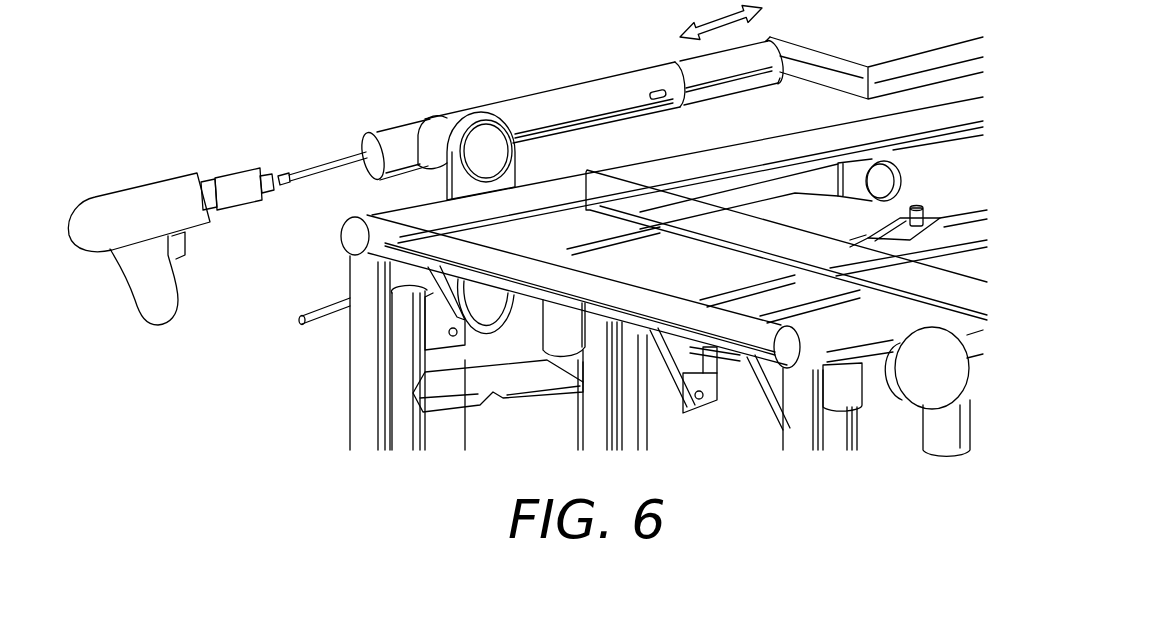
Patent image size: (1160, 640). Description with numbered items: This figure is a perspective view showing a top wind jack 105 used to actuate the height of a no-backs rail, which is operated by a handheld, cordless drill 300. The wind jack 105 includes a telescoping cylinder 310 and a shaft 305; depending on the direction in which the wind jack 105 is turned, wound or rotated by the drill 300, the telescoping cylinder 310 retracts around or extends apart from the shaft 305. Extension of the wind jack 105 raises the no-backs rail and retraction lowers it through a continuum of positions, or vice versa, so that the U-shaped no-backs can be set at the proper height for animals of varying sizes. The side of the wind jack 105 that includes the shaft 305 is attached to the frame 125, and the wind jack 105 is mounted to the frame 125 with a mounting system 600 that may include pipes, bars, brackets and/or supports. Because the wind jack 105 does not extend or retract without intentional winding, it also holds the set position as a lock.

The wind jack 105 is at (476, 84).
The frame 125 is at (553, 195).
The handheld drill 300 is at (160, 226).
The shaft 305 is at (719, 62).
The telescoping cylinder 310 is at (598, 97).
The mounting system 600 is at (425, 137).